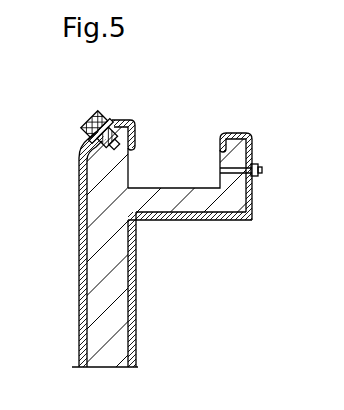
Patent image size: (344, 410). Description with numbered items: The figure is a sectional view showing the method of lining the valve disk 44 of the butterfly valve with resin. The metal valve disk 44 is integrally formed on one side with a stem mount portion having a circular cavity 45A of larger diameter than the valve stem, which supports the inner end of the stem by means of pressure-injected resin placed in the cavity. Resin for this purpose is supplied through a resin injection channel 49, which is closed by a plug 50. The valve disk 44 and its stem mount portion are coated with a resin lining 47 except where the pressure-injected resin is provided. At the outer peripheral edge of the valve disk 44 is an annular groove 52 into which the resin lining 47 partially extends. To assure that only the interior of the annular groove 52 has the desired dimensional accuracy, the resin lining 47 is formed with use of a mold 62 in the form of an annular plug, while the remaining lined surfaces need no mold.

The valve disk 44 is at (97, 307).
The circular cavity 45A is at (184, 171).
The resin lining 47 is at (82, 257).
The resin injection channel 49 is at (232, 163).
The plug 50 is at (262, 176).
The annular groove 52 is at (131, 155).
The mold 62 is at (99, 117).